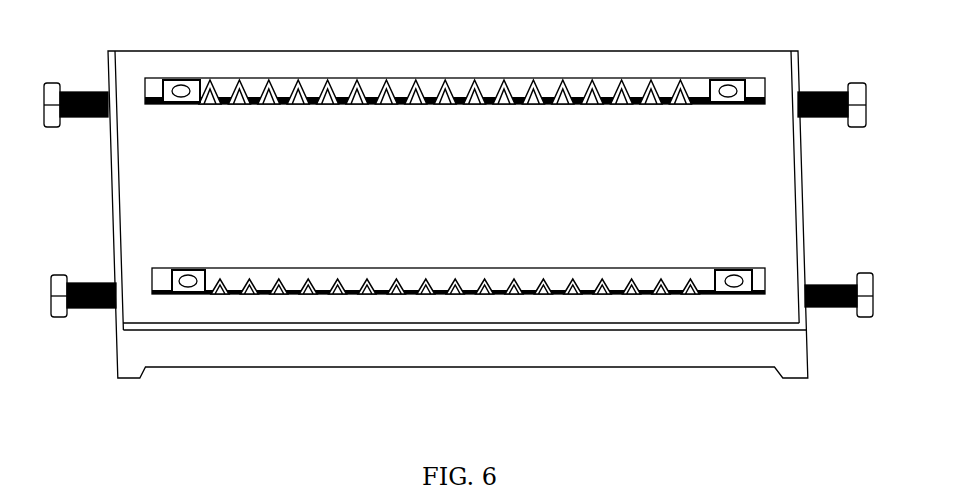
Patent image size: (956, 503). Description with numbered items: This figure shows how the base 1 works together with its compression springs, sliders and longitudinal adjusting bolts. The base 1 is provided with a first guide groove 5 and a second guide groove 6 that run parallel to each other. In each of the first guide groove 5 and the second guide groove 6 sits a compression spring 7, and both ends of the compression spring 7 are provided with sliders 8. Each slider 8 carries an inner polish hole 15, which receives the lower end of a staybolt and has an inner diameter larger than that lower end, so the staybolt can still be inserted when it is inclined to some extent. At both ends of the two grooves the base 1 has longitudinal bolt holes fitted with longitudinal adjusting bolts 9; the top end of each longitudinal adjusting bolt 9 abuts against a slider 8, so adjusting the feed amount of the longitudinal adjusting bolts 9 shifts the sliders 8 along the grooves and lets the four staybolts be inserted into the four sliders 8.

The base 1 is at (372, 348).
The first guide groove 5 is at (583, 277).
The second guide groove 6 is at (397, 86).
The compression spring 7 is at (484, 282).
The slider 8 is at (175, 298).
The longitudinal adjusting bolt 9 is at (85, 283).
The inner polish hole 15 is at (183, 88).